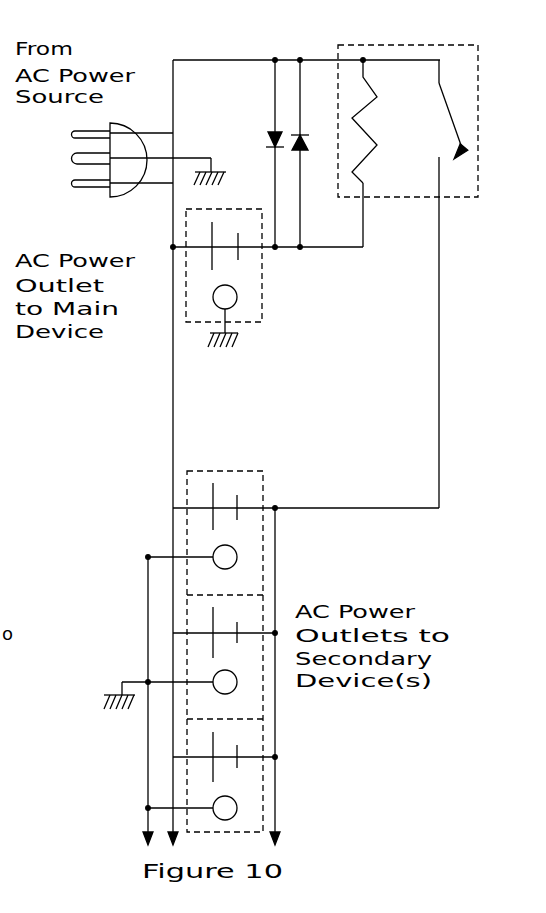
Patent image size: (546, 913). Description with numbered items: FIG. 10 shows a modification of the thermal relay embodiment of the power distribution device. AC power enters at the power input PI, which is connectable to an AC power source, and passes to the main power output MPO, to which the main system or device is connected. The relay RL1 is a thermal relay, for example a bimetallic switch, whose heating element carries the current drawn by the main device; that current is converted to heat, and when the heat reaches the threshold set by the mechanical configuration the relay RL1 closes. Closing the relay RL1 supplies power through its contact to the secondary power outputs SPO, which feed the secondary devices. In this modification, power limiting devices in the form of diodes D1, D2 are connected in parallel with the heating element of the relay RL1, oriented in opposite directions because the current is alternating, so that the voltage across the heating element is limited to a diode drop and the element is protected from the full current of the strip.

The power input PI is at (87, 160).
The diode D1 is at (263, 153).
The diode D2 is at (314, 153).
The relay RL1 is at (405, 106).
The main power output MPO is at (251, 278).
The secondary power output SPO is at (222, 651).